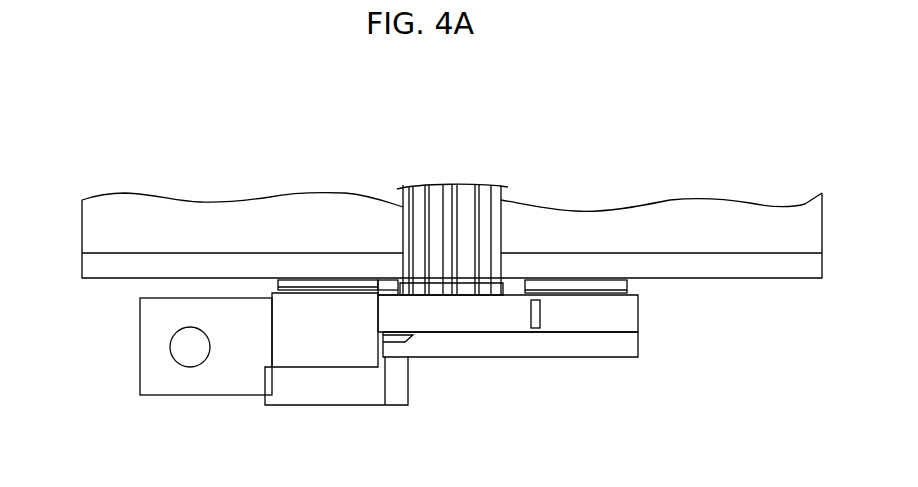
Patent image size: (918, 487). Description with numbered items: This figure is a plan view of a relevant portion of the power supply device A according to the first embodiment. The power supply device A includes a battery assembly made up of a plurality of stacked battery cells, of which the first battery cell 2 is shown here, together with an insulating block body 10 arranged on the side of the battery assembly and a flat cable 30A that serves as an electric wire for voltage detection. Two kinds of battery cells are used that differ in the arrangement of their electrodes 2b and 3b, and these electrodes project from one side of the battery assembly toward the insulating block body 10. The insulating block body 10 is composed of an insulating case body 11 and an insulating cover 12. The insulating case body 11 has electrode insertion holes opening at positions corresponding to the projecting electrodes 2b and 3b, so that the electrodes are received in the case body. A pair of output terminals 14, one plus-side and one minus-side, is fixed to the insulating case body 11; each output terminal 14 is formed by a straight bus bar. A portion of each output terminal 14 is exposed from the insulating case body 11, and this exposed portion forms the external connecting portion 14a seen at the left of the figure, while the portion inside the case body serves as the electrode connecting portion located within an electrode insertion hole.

The first battery cell 2 is at (692, 210).
The power supply device A is at (117, 183).
The electrode 2b is at (322, 283).
The flat cable 30A is at (454, 190).
The electrode 3b is at (584, 284).
The insulating block body 10 is at (643, 331).
The insulating cover 12 is at (517, 348).
The insulating case body 11 is at (330, 345).
The output terminal 14 is at (180, 396).
The external connecting portion 14a is at (145, 383).